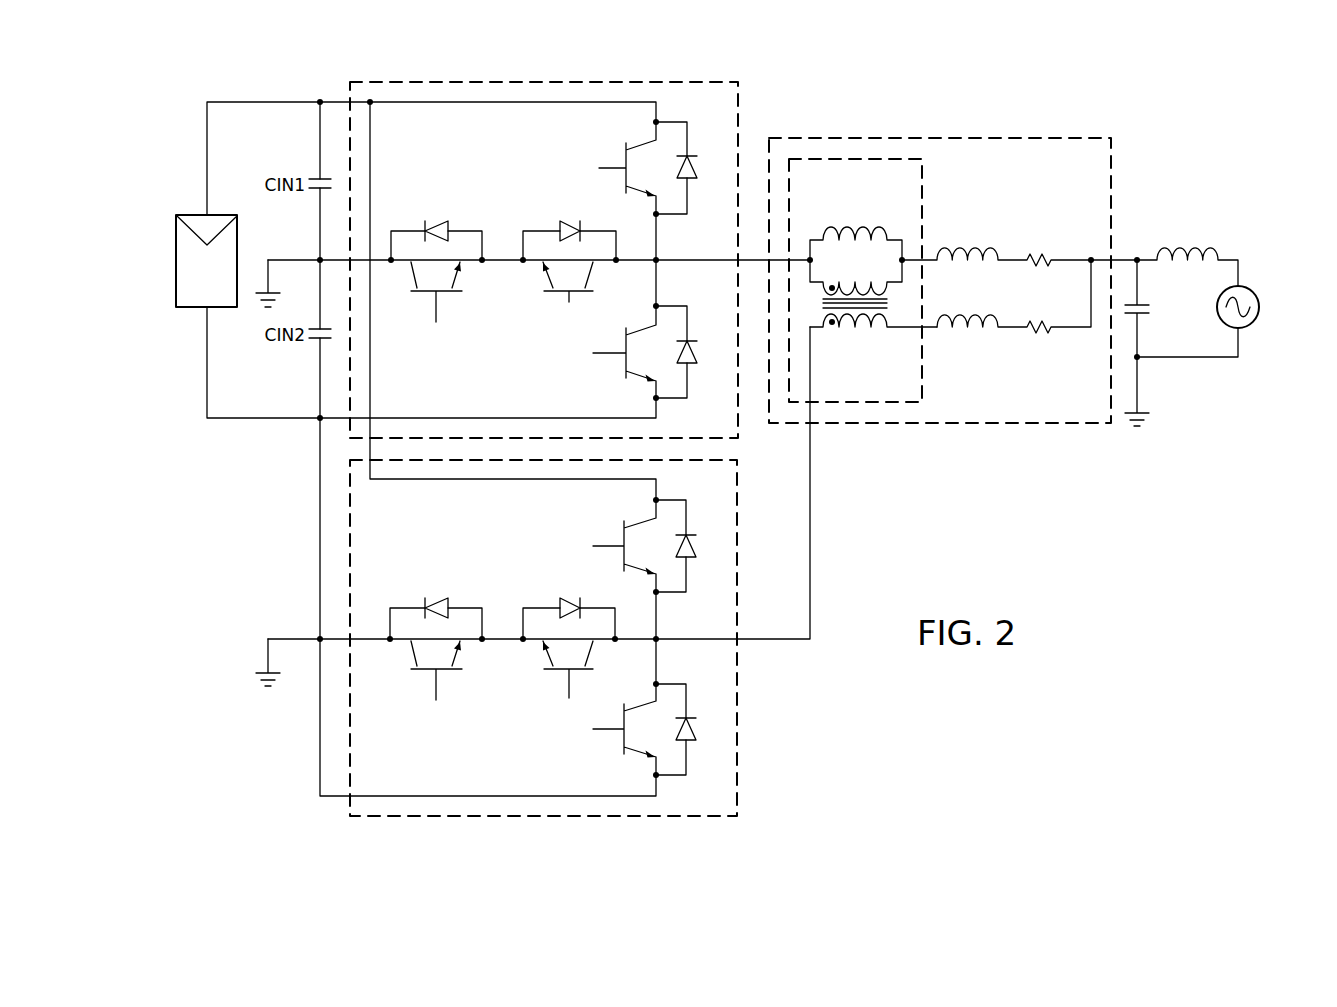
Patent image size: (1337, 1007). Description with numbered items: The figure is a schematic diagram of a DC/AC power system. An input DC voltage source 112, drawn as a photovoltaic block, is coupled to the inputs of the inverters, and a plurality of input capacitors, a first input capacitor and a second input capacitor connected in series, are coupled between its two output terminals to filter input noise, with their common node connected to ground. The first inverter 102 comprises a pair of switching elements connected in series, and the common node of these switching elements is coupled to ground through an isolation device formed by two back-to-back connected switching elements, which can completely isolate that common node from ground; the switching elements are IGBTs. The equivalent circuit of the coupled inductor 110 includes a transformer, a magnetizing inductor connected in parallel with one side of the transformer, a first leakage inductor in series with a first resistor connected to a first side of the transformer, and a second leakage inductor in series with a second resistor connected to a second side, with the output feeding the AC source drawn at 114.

The first inverter 102 is at (533, 81).
The coupled inductor 110 is at (940, 138).
The input DC voltage source 112 is at (175, 260).
The AC grid / AC source 114 is at (1260, 300).